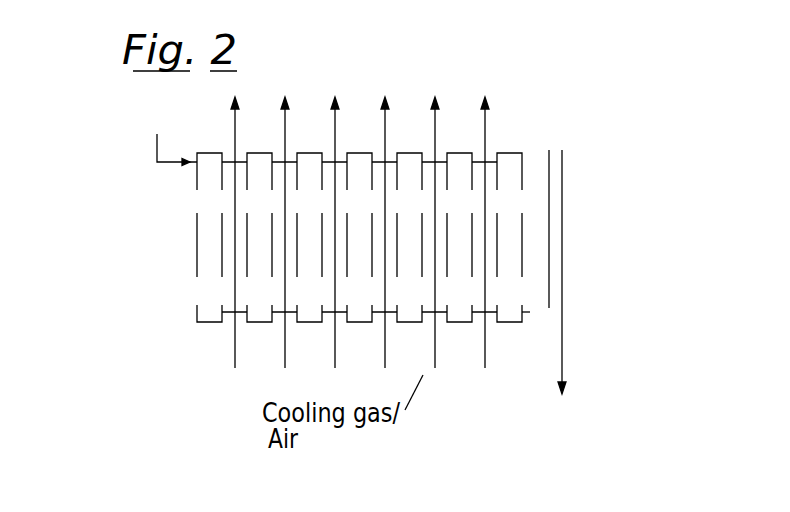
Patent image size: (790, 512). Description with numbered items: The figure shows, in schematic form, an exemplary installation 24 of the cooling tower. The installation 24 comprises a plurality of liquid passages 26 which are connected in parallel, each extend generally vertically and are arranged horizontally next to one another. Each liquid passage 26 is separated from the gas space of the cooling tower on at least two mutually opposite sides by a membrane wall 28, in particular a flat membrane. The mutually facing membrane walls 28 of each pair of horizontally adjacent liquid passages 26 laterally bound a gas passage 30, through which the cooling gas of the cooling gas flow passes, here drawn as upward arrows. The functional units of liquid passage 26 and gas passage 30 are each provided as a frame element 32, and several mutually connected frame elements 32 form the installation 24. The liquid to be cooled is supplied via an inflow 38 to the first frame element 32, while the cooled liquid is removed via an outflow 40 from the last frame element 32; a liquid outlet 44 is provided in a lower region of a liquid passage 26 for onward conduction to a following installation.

The installation 24 is at (478, 53).
The liquid passage 26 is at (260, 288).
The membrane wall 28 is at (502, 262).
The gas passage 30 is at (233, 158).
The frame element 32 is at (510, 178).
The inflow 38 is at (157, 134).
The outflow 40 is at (565, 373).
The liquid outlet 44 is at (524, 312).